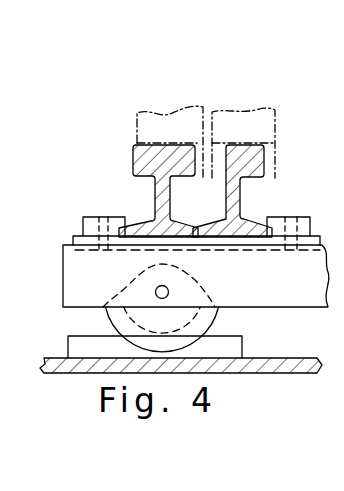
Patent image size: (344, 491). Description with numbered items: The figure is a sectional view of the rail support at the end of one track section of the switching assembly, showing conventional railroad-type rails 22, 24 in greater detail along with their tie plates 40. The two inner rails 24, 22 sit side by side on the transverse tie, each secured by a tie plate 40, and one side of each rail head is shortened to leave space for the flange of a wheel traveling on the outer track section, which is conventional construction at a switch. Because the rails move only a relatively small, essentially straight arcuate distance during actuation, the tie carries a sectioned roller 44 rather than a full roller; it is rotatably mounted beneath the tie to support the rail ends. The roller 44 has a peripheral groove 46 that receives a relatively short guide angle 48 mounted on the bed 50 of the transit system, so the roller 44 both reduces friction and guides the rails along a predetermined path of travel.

The rail 22 is at (237, 151).
The rail 24 is at (136, 158).
The tie plate 40 is at (308, 219).
The roller 44 is at (193, 279).
The peripheral groove 46 is at (212, 322).
The guide angle 48 is at (232, 346).
The bed 50 is at (276, 372).